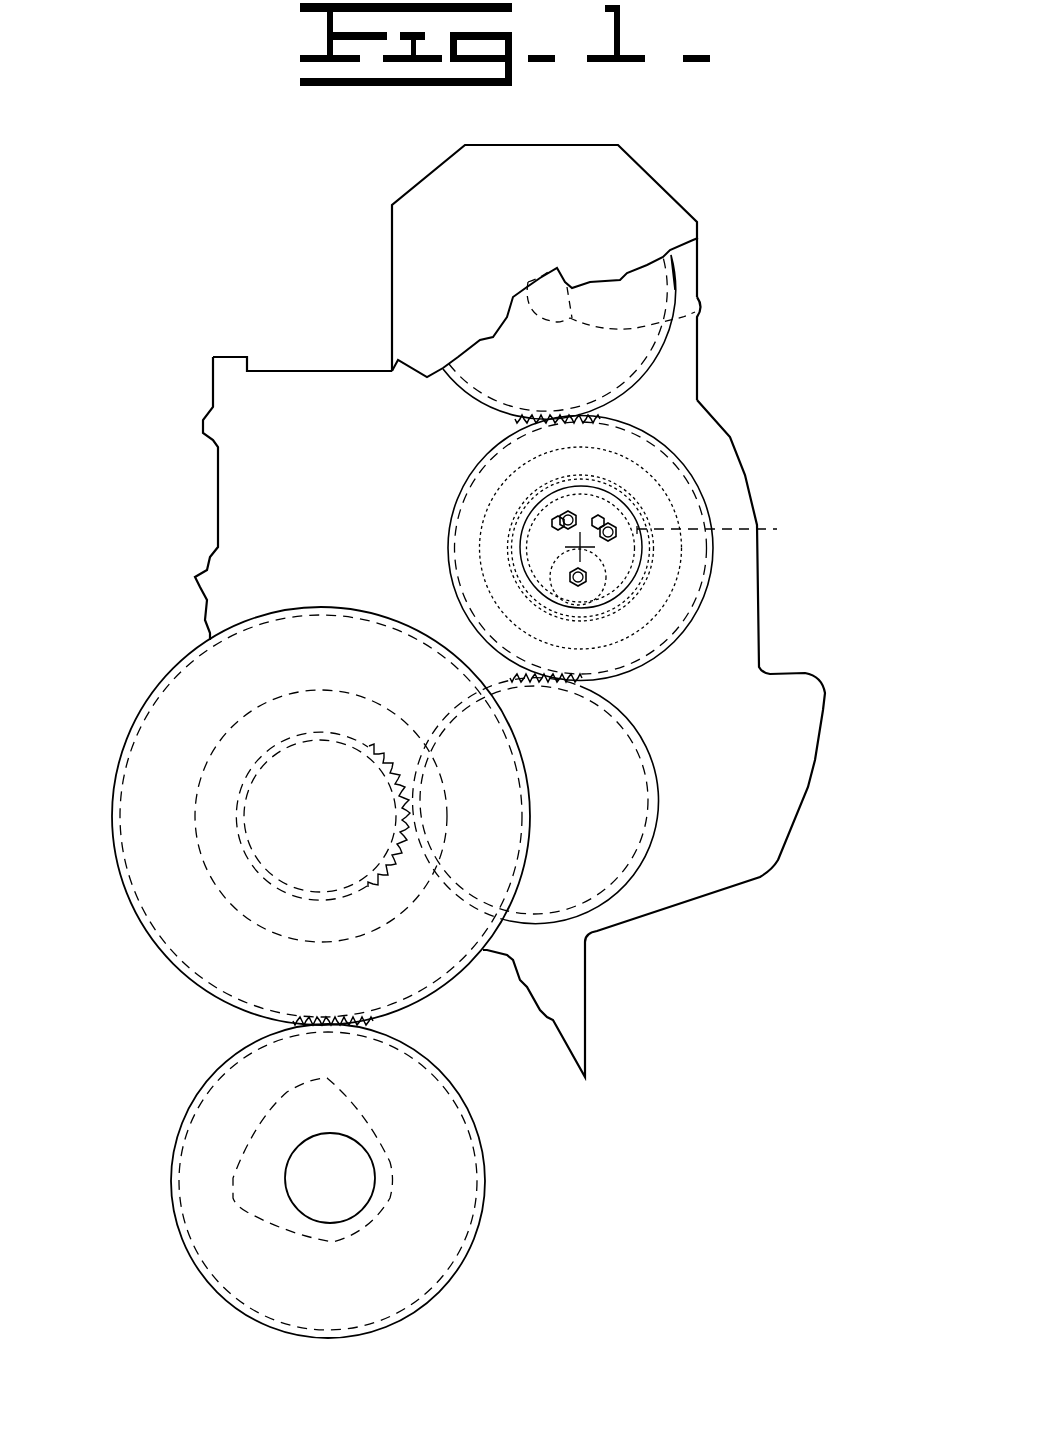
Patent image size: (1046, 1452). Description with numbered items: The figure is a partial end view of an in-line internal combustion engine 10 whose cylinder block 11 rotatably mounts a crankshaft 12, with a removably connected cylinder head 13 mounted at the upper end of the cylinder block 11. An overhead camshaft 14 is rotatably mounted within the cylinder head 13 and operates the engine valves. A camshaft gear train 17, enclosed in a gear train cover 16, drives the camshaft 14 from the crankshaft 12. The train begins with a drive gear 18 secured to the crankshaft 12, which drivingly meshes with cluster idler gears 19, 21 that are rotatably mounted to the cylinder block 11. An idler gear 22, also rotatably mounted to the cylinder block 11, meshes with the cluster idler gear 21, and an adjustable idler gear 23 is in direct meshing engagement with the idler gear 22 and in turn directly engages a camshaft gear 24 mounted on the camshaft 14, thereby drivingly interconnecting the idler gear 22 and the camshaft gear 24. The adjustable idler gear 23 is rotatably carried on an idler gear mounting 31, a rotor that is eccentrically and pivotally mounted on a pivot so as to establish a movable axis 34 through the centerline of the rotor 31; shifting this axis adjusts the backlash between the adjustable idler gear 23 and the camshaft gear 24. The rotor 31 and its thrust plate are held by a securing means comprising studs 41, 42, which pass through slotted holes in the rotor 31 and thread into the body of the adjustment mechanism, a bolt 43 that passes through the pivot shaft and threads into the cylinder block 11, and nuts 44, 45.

The internal combustion engine 10 is at (745, 224).
The cylinder block 11 is at (573, 998).
The crankshaft 12 is at (365, 1146).
The cylinder head 13 is at (687, 272).
The overhead camshaft 14 is at (705, 307).
The gear train cover 16 is at (433, 268).
The camshaft gear train 17 is at (660, 375).
The drive gear 18 is at (485, 1197).
The cluster idler gear 19 is at (132, 900).
The cluster idler gear 21 is at (243, 787).
The idler gear 22 is at (653, 842).
The adjustable idler gear 23 is at (713, 554).
The camshaft gear 24 is at (667, 358).
The idler gear mounting 31 is at (730, 528).
The movable axis 34 is at (577, 548).
The stud 41 is at (575, 514).
The stud 42 is at (615, 538).
The bolt 43 is at (590, 572).
The nut 44 is at (575, 515).
The nut 45 is at (603, 521).